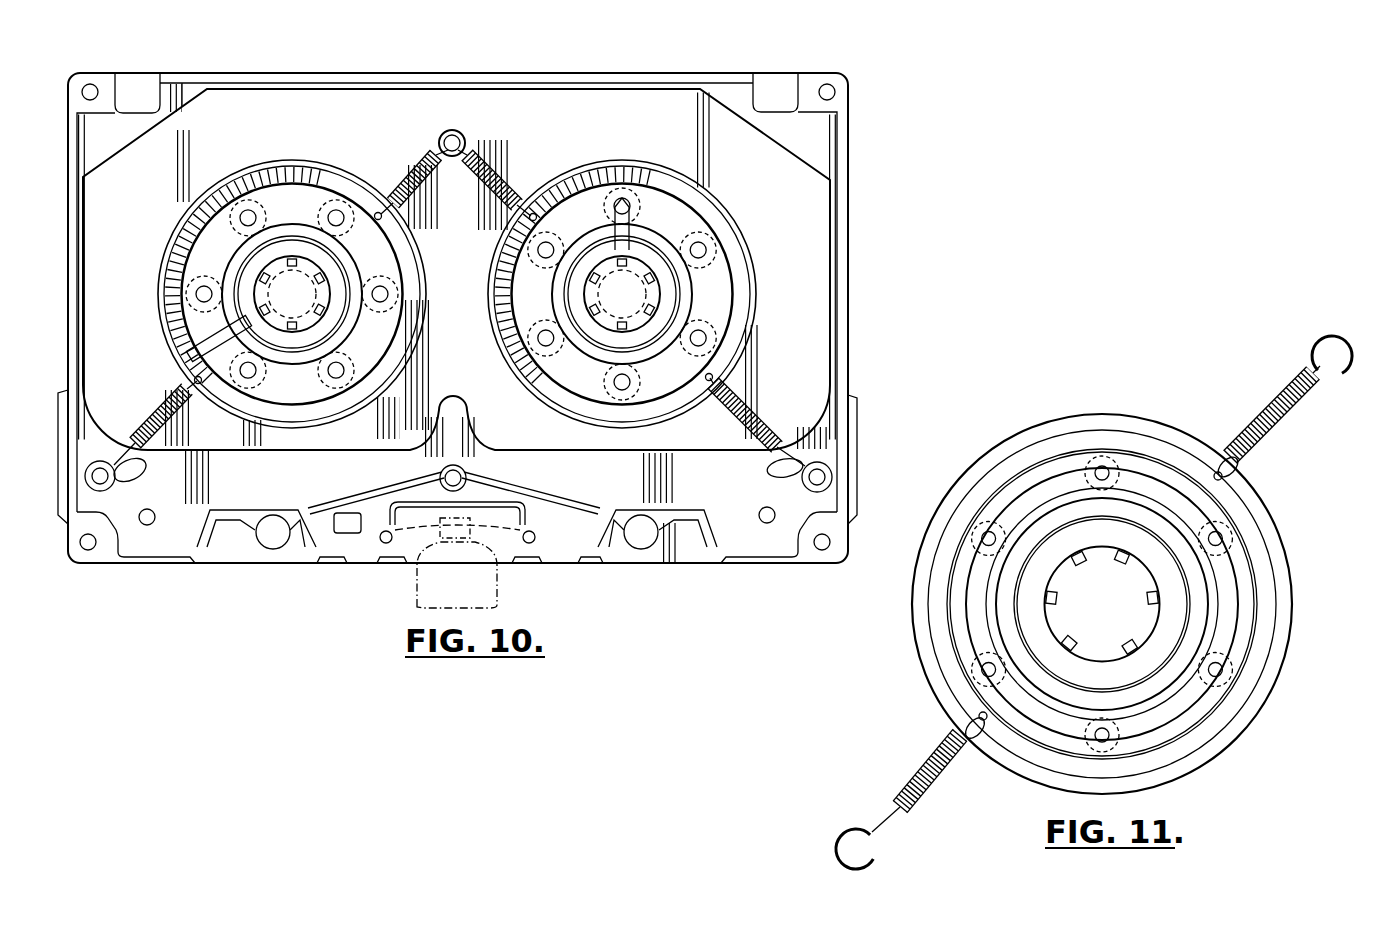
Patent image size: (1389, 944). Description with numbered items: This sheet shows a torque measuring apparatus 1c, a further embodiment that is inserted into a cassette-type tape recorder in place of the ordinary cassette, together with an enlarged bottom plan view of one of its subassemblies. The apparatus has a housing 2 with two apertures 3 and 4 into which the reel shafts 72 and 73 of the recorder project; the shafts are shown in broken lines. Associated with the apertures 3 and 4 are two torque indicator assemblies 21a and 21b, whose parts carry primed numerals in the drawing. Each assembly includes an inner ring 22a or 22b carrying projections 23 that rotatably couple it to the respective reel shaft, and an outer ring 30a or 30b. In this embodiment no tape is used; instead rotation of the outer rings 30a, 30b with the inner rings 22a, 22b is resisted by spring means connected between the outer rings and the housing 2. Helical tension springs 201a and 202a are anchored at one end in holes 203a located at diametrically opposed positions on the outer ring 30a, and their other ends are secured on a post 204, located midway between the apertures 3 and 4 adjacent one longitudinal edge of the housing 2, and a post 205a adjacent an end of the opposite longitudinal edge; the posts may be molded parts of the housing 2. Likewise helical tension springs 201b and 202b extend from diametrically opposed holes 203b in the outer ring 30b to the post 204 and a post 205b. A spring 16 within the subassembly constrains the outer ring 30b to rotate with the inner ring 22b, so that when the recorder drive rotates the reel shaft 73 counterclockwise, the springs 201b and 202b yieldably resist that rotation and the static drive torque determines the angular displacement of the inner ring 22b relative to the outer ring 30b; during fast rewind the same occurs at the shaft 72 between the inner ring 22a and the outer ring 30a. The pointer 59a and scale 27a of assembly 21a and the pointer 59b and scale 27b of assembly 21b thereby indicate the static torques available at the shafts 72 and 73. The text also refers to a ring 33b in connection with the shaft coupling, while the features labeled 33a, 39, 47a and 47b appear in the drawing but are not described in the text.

In FIG. 10, the torque measuring apparatus 1c is at (870, 152).
In FIG. 10, the housing 2 is at (850, 262).
In FIG. 10, the aperture 3 is at (315, 310).
In FIG. 10, the aperture 4 is at (640, 340).
In FIG. 11, the spring 16 is at (1063, 470).
In FIG. 10, the torque indicator assembly 21a is at (348, 160).
In FIG. 10, the torque indicator assembly 21b is at (742, 215).
In FIG. 11, the torque indicator assembly 21b is at (1300, 572).
In FIG. 10, the inner ring 22a is at (262, 268).
In FIG. 10, the inner ring 22b is at (637, 260).
In FIG. 11, the inner ring 22b is at (1150, 565).
In FIG. 11, the projections 23 is at (1058, 602).
In FIG. 10, the scale 27a is at (293, 162).
In FIG. 10, the scale 27b is at (580, 166).
In FIG. 10, the outer ring 30a is at (232, 186).
In FIG. 10, the outer ring 30b is at (742, 232).
In FIG. 11, the outer ring 30b is at (1290, 655).
In FIG. 10, the left reel holes 33a is at (262, 378).
In FIG. 10, the inner ring 33b is at (560, 400).
In FIG. 11, the inner ring 33b is at (1180, 735).
In FIG. 11, the outer ring 39 is at (975, 493).
In FIG. 10, the left scale 47a is at (352, 200).
In FIG. 10, the right scale 47b is at (690, 200).
In FIG. 10, the pointer 59a is at (188, 345).
In FIG. 10, the pointer 59b is at (619, 198).
In FIG. 10, the reel shaft 72 is at (320, 282).
In FIG. 10, the reel shaft 73 is at (640, 300).
In FIG. 10, the helical tension spring 201a is at (432, 175).
In FIG. 10, the helical tension spring 201b is at (480, 170).
In FIG. 11, the helical tension spring 201b is at (1270, 400).
In FIG. 10, the helical tension spring 202a is at (150, 420).
In FIG. 10, the helical tension spring 202b is at (780, 440).
In FIG. 11, the helical tension spring 202b is at (930, 752).
In FIG. 10, the holes 203a is at (400, 232).
In FIG. 10, the holes 203b is at (492, 250).
In FIG. 11, the holes 203b is at (1240, 476).
In FIG. 10, the post 204 is at (458, 132).
In FIG. 10, the post 205a is at (140, 500).
In FIG. 10, the post 205b is at (800, 500).